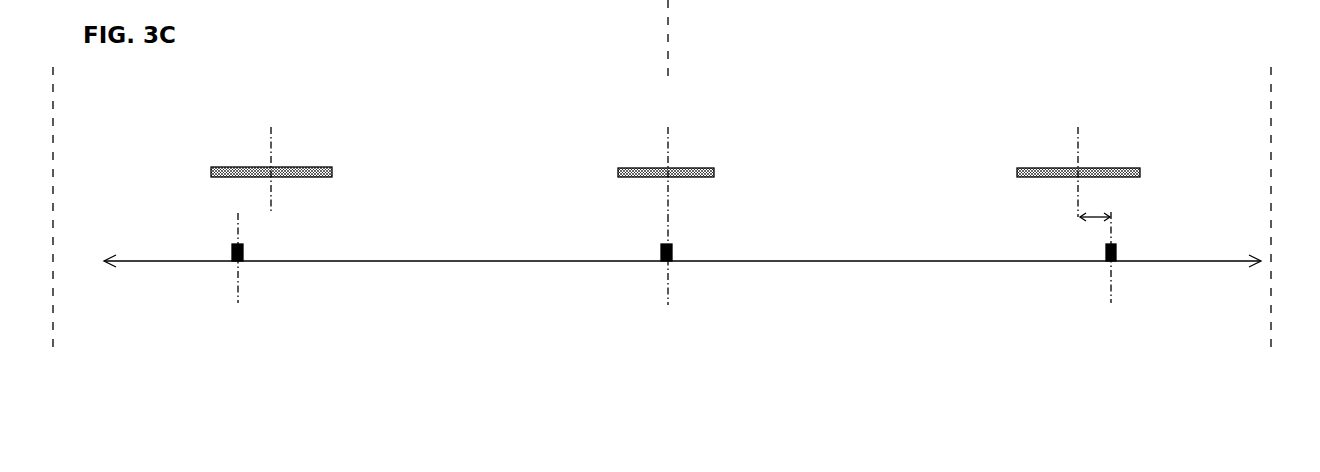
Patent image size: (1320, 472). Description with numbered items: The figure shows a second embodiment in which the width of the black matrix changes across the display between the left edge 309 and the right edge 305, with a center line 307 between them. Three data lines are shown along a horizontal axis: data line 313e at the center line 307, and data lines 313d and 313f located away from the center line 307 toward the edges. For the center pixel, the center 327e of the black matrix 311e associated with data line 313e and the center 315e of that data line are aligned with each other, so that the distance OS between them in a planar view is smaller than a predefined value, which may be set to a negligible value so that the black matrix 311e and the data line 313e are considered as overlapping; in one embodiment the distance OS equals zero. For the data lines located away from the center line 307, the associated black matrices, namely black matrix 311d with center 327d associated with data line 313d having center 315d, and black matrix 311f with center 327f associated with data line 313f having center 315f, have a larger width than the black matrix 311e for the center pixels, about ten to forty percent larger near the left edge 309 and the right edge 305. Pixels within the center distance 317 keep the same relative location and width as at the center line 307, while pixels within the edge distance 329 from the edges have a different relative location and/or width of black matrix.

The left edge 309 is at (54, 325).
The right edge 305 is at (1262, 330).
The center line 307 is at (667, 33).
The center distance 317 is at (879, 2).
The edge distance 329 is at (1194, 4).
The black matrix 311d is at (208, 172).
The black matrix 311e is at (617, 172).
The black matrix 311f is at (1017, 172).
The center of black matrix 327d is at (272, 152).
The center of black matrix 327e is at (669, 140).
The center of black matrix 327f is at (1079, 145).
The data line 313d is at (232, 252).
The data line 313e is at (661, 252).
The data line 313f is at (1106, 252).
The center of data line 315d is at (238, 287).
The center of data line 315e is at (668, 282).
The center of data line 315f is at (1111, 283).
The distance OS is at (1113, 215).